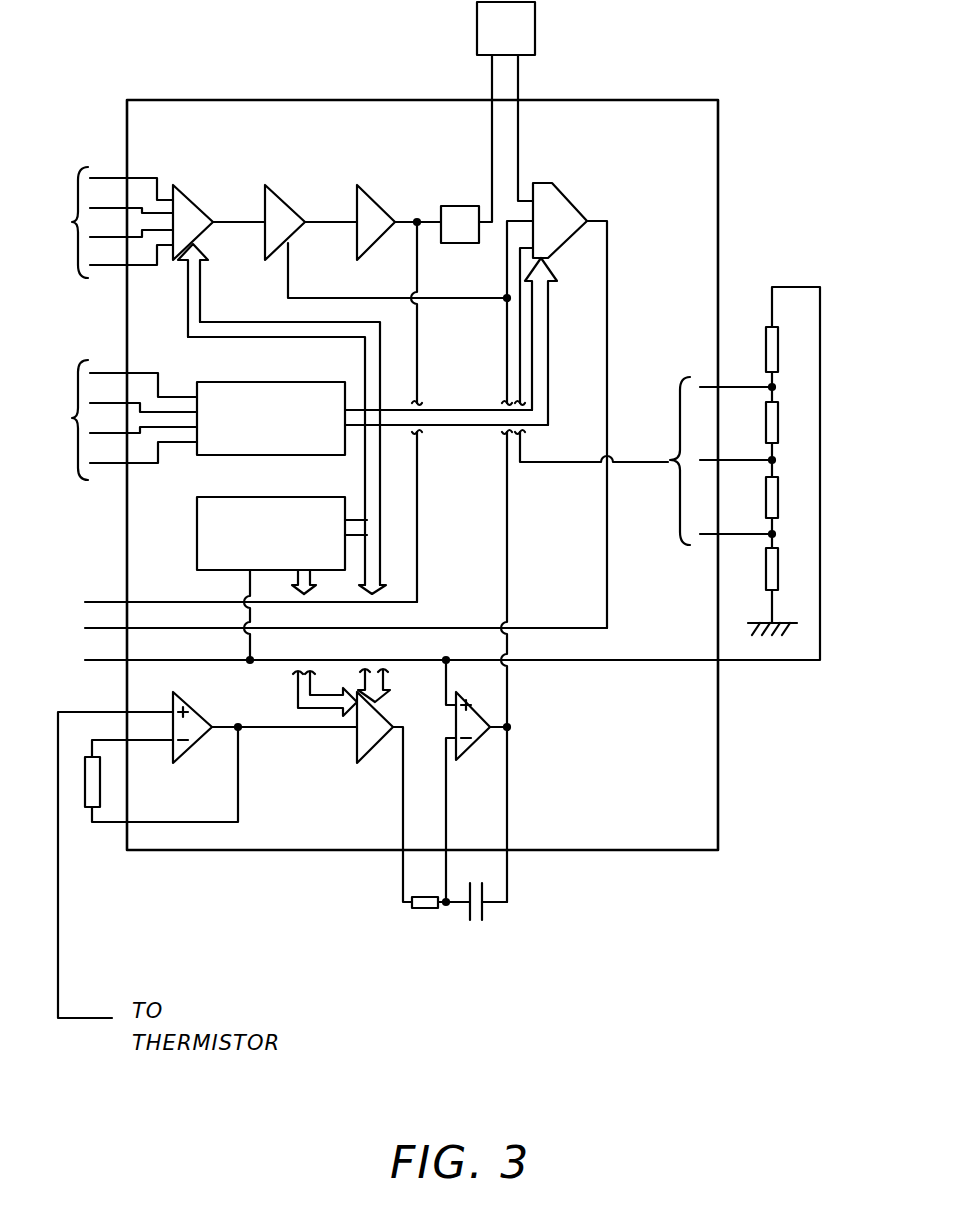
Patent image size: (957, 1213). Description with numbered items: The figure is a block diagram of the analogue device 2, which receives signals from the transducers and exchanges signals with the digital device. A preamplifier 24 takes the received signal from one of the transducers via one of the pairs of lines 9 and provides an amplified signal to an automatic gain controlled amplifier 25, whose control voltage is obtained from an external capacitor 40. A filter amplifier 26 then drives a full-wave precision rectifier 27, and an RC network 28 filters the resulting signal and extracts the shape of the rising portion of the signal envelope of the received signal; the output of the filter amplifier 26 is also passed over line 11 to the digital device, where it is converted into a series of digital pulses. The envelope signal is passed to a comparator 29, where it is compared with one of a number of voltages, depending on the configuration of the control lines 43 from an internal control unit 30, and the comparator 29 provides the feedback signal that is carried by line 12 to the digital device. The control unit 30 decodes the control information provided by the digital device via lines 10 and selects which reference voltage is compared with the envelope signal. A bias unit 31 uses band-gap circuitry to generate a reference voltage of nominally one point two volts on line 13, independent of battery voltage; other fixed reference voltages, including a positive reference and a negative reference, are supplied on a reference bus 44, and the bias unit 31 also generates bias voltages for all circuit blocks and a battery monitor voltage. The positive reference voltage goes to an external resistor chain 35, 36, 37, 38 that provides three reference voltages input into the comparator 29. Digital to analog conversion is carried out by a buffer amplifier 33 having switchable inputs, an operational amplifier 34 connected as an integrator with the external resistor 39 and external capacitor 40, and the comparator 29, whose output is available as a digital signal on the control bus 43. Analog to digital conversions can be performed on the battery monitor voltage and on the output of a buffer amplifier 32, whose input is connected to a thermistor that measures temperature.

The analogue device 2 is at (172, 100).
The lines 9 is at (108, 222).
The lines 10 is at (119, 420).
The line 11 is at (102, 602).
The line 12 is at (105, 628).
The line 13 is at (98, 662).
The preamplifier 24 is at (198, 200).
The automatic gain controlled (AGC) amplifier 25 is at (287, 198).
The filter amplifier 26 is at (375, 200).
The full-wave precision rectifier 27 is at (453, 206).
The RC network 28 is at (477, 28).
The comparator 29 is at (572, 202).
The control unit 30 is at (232, 382).
The bias unit 31 is at (224, 497).
The buffer amplifier 32 is at (190, 706).
The buffer amplifier 33 is at (378, 745).
The operational amplifier 34 is at (472, 745).
The external resistor chain 35 is at (766, 348).
The external resistor chain 36 is at (780, 418).
The external resistor chain 37 is at (780, 493).
The external resistor chain 38 is at (766, 572).
The external resistor 39 is at (425, 918).
The external capacitor 40 is at (490, 916).
The control lines 43 is at (452, 428).
The reference bus 44 is at (296, 700).